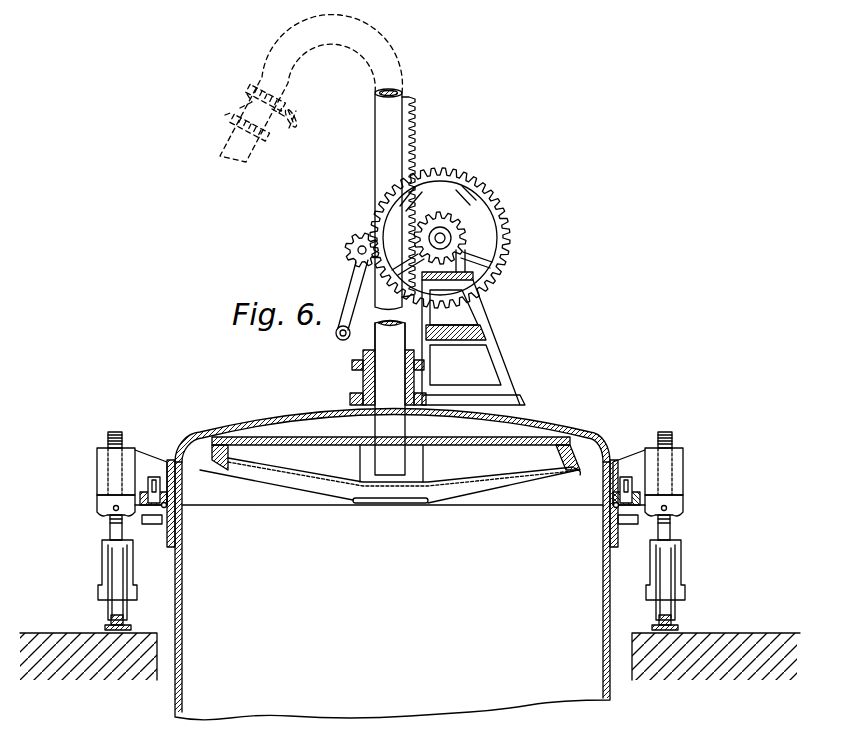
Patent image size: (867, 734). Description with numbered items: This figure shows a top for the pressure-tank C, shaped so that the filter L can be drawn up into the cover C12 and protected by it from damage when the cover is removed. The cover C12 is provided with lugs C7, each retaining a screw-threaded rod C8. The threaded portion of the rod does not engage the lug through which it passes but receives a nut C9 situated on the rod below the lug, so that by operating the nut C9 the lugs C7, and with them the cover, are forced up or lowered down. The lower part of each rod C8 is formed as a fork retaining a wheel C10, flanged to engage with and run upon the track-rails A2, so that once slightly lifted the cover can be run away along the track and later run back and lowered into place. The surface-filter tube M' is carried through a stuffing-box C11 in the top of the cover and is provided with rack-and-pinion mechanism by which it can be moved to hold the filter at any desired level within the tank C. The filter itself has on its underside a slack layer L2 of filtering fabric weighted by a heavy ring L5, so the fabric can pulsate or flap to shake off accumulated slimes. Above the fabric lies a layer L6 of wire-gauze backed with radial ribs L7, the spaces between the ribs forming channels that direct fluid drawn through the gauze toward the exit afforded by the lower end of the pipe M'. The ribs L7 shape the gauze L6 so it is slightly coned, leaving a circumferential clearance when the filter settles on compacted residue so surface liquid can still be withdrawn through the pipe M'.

The tank C is at (175, 574).
The cover C12 is at (197, 434).
The stuffing-box C11 is at (358, 388).
The surface-filter tube M' is at (362, 357).
The filter L is at (396, 456).
The slack layer of filtering fabric L2 is at (276, 487).
The layer or screen of wire-gauze L6 is at (316, 479).
The heavy ring L5 is at (370, 504).
The radial ribs L7 is at (466, 461).
The lugs C7 is at (128, 460).
The screw-threaded rod C8 is at (690, 418).
The nut C9 is at (697, 512).
The wheel C10 is at (695, 560).
The track-rails A2 is at (705, 624).